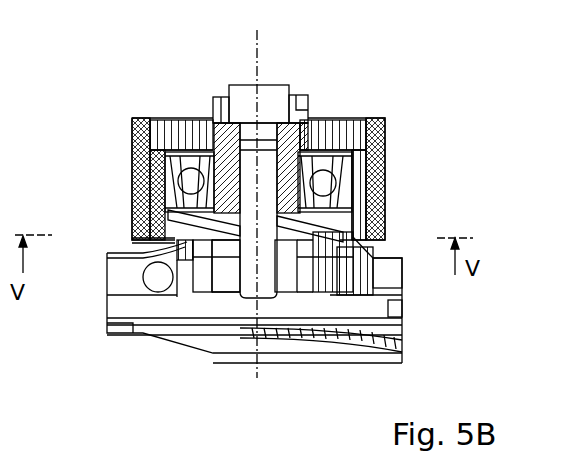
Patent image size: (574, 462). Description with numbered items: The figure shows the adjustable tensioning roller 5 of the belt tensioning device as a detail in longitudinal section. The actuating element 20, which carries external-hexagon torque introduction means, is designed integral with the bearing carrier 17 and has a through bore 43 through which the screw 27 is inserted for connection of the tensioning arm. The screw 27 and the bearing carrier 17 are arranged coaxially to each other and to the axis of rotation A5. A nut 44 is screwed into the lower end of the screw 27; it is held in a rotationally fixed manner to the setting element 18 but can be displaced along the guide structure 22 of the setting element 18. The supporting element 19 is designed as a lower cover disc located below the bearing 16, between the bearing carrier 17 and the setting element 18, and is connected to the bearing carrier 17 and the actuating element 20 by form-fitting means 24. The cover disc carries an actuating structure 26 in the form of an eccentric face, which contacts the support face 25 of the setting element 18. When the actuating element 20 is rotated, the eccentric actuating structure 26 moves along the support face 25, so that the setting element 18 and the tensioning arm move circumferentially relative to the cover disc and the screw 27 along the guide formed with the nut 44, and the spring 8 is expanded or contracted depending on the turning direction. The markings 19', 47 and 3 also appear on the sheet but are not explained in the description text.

The axis of rotation A5 is at (258, 37).
The tensioning roller 5 is at (385, 135).
The bearing 16 is at (175, 120).
The sleeve 19' is at (351, 104).
The actuating element 20 is at (210, 101).
The through bore 43 is at (280, 125).
The screw 27 is at (275, 148).
The bearing carrier 17 is at (298, 178).
The form-fitting means 24 is at (345, 220).
The supporting element 19 is at (357, 250).
The support face 25 is at (205, 232).
The nut 44 is at (230, 232).
The actuating structure 26 is at (132, 238).
The spring 8 is at (157, 282).
The setting element 18 is at (107, 270).
The guide structure 22 is at (298, 282).
The element 47 is at (479, 11).
The element 3 is at (564, 302).